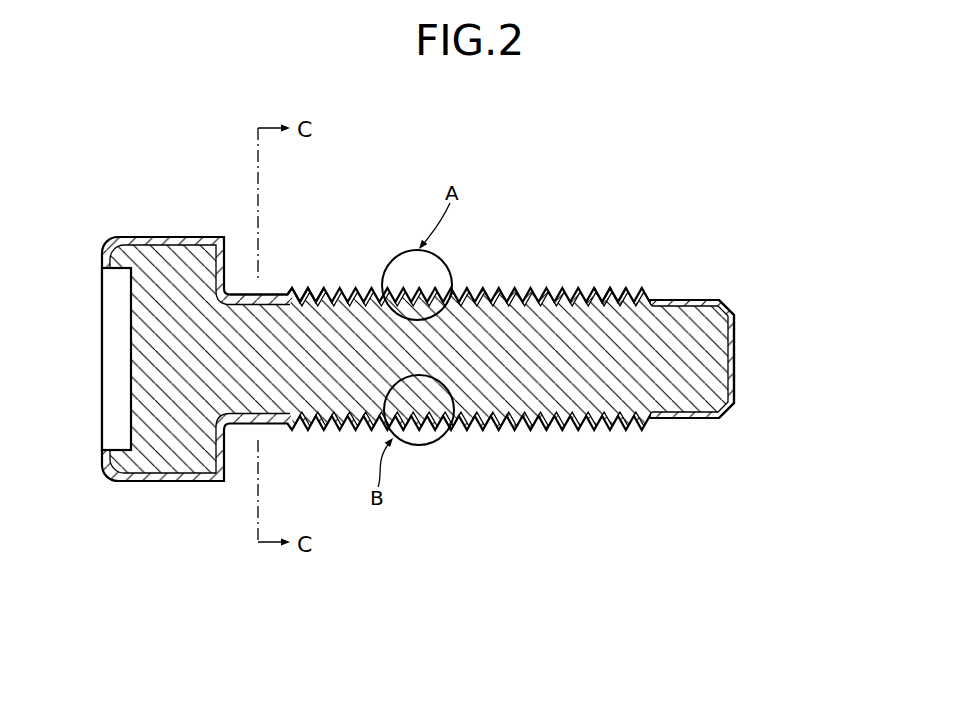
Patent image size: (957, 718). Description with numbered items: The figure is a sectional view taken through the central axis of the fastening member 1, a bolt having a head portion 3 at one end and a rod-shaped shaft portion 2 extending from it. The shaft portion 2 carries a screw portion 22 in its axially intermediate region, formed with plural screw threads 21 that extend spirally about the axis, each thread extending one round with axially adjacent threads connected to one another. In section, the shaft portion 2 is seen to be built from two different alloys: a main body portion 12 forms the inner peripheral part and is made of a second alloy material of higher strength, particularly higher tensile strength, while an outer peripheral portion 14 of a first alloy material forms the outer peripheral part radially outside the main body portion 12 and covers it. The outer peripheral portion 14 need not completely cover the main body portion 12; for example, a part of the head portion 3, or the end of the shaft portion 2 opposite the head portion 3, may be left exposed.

The fastening member 1 is at (636, 178).
The shaft portion 2 is at (504, 289).
The head portion 3 is at (180, 236).
The main body portion 12 is at (719, 357).
The outer peripheral portion 14 is at (318, 288).
The screw threads 21 is at (614, 283).
The screw portion 22 is at (650, 440).